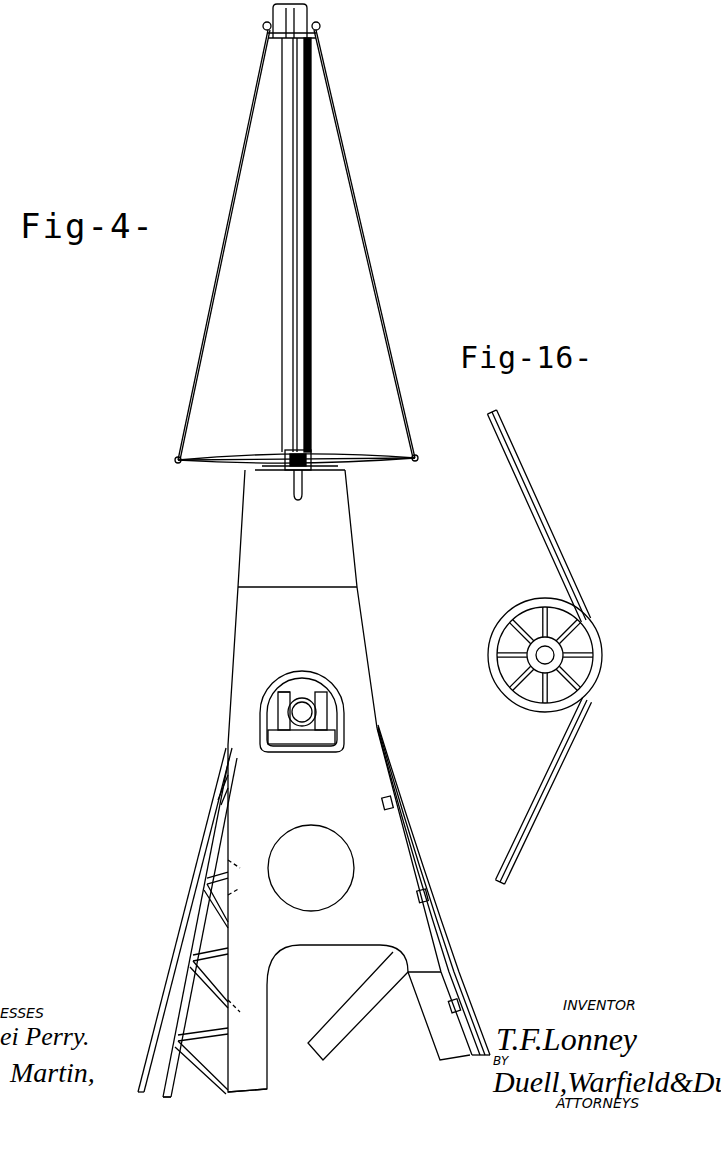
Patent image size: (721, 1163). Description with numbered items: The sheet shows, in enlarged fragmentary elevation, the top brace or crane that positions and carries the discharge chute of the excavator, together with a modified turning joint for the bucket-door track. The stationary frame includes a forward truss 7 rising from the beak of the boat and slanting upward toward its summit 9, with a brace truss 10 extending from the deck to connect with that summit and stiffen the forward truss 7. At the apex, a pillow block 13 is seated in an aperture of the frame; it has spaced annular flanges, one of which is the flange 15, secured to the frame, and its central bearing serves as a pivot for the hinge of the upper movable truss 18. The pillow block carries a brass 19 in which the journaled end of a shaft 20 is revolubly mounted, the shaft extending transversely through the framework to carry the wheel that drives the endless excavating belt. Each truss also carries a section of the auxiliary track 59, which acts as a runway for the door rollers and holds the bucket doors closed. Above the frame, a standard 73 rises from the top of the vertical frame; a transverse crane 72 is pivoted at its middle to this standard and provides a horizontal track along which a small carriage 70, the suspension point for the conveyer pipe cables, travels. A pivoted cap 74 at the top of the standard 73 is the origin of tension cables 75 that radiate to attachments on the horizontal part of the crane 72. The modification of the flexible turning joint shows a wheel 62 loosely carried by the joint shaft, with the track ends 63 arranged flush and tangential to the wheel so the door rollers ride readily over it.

In FIG. 4, the forward truss 7 is at (438, 1022).
In FIG. 4, the summit 9 is at (285, 606).
In FIG. 4, the brace truss 10 is at (268, 1085).
In FIG. 4, the pillow block 13 is at (325, 744).
In FIG. 4, the annular flange 15 is at (343, 712).
In FIG. 4, the upper movable truss 18 is at (165, 1098).
In FIG. 4, the brass 19 is at (277, 690).
In FIG. 4, the shaft 20 is at (306, 712).
In FIG. 4, the auxiliary track 59 is at (204, 836).
In FIG. 16, the auxiliary track 59 is at (542, 793).
In FIG. 16, the wheel 62 is at (531, 612).
In FIG. 16, the track ends 63 is at (584, 697).
In FIG. 4, the carriage 70 is at (292, 482).
In FIG. 4, the transverse crane 72 is at (310, 450).
In FIG. 4, the standard 73 is at (286, 60).
In FIG. 4, the pivoted cap 74 is at (306, 10).
In FIG. 4, the tension cables 75 is at (297, 304).